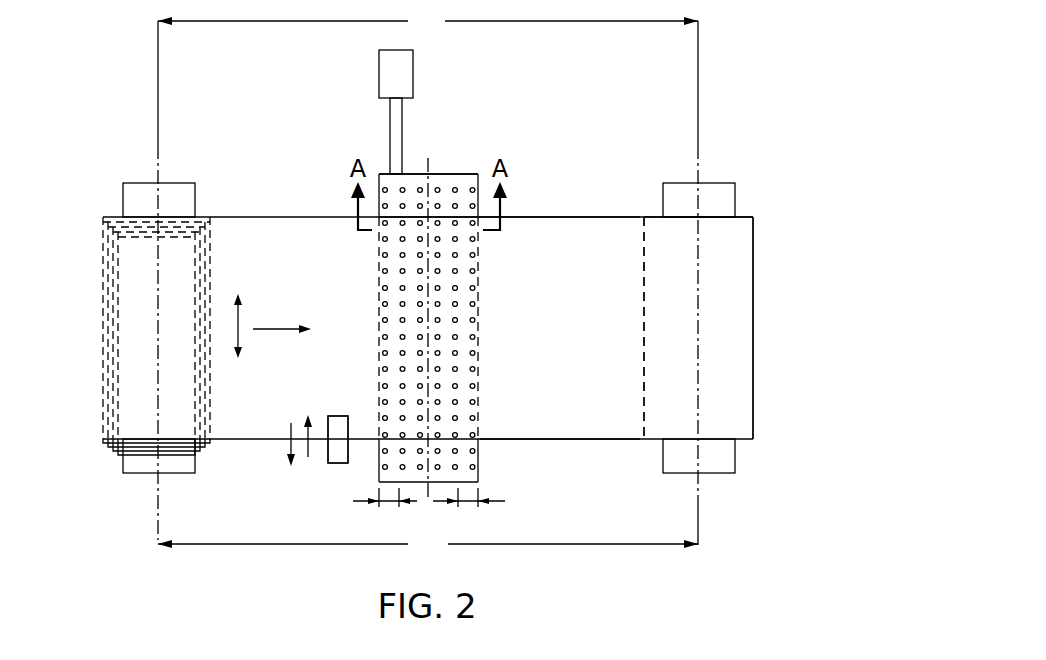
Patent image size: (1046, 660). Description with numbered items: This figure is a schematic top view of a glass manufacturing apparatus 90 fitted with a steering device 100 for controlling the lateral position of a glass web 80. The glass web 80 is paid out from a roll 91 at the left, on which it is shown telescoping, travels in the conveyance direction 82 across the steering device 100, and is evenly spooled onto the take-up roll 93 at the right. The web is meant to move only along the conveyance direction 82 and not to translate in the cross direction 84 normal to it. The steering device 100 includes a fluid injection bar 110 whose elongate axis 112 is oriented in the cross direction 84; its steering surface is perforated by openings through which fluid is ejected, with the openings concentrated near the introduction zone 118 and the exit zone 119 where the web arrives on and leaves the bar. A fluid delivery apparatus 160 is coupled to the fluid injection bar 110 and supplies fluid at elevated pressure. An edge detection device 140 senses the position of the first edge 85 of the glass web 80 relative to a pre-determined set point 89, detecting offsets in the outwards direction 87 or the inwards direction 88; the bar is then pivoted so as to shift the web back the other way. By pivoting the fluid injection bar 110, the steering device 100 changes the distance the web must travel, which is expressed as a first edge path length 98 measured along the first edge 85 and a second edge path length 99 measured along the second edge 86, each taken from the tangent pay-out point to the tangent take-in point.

The glass web 80 is at (640, 215).
The conveyance direction 82 is at (276, 331).
The cross direction 84 is at (240, 306).
The first edge 85 is at (596, 441).
The second edge 86 is at (293, 215).
The outwards direction 87 is at (289, 449).
The inwards direction 88 is at (305, 420).
The pre-determined set point 89 is at (338, 415).
The glass manufacturing apparatus 90 is at (740, 69).
The supply roll 91 is at (123, 200).
The take-up roll 93 is at (735, 200).
The first edge path length 98 is at (428, 22).
The second edge path length 99 is at (428, 545).
The steering device 100 is at (542, 127).
The fluid injection bar 110 is at (479, 466).
The elongate axis 112 is at (389, 128).
The introduction zone 118 is at (389, 508).
The exit zone 119 is at (468, 508).
The edge detection device 140 is at (327, 457).
The fluid delivery apparatus 160 is at (378, 80).